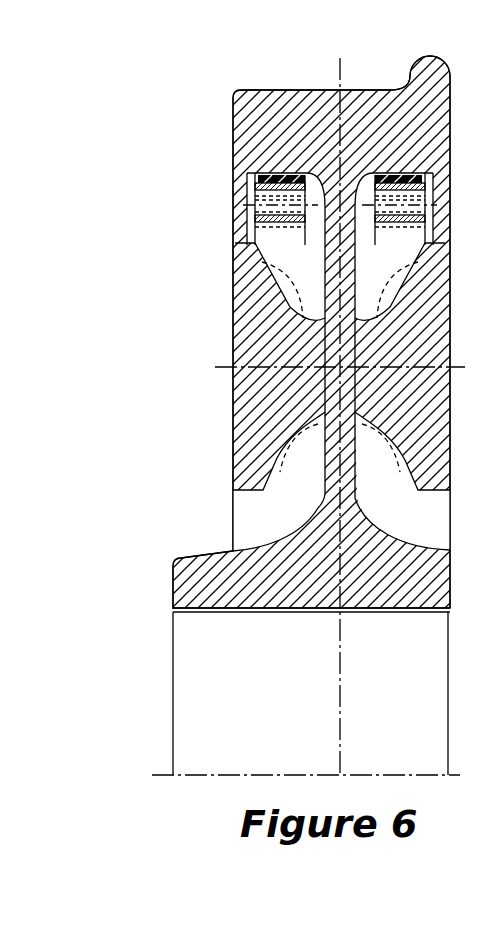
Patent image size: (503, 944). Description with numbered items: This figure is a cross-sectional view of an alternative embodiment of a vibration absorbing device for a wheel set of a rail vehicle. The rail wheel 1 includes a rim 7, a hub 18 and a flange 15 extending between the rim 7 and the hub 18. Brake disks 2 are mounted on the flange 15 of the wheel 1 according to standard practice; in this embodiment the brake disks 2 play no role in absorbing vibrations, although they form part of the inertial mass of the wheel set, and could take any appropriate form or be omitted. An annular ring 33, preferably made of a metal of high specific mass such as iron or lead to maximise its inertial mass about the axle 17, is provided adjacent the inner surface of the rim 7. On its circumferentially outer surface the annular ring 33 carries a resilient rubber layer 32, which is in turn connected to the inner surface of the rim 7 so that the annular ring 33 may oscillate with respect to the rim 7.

The rail wheel 1 is at (233, 152).
The brake disks 2 is at (262, 402).
The rim 7 is at (267, 90).
The flange 15 is at (322, 483).
The axle 17 is at (213, 692).
The hub 18 is at (197, 587).
The resilient rubber layer 32 is at (247, 177).
The annular ring 33 is at (255, 212).